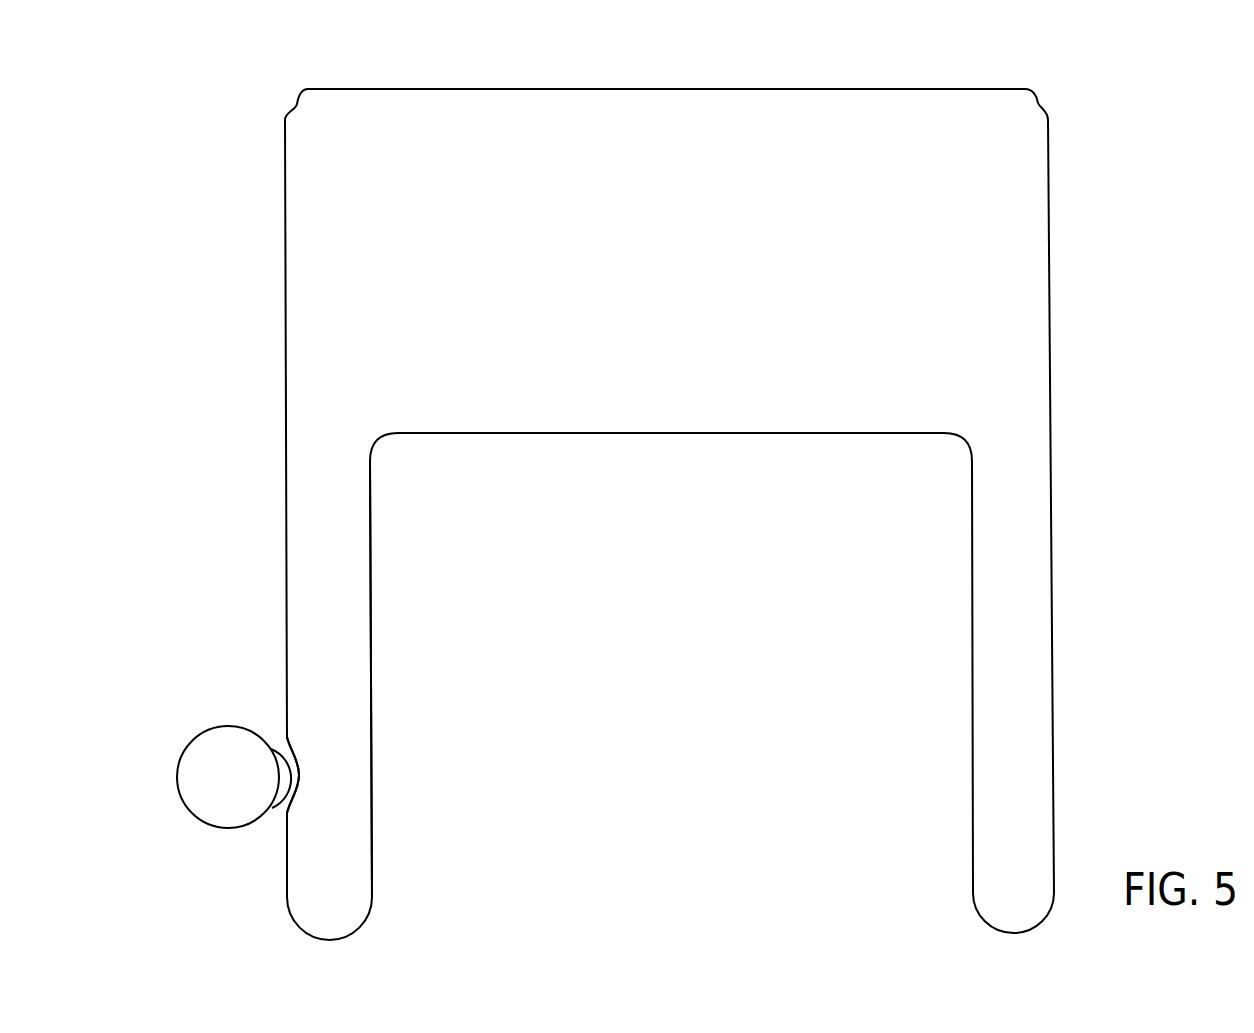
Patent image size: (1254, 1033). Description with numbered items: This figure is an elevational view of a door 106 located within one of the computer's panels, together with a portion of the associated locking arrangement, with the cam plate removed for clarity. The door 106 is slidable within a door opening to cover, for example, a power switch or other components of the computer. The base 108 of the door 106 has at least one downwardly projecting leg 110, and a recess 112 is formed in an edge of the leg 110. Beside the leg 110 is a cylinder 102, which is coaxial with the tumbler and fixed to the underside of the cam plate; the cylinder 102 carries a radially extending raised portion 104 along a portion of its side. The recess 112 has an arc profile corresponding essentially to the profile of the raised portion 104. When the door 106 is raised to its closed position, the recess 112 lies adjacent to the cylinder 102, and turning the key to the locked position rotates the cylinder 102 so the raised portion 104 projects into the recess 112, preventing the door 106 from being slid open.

The cylinder 102 is at (237, 817).
The raised portion 104 is at (291, 756).
The door 106 is at (663, 371).
The base 108 is at (715, 435).
The leg 110 is at (358, 602).
The recess 112 is at (300, 775).